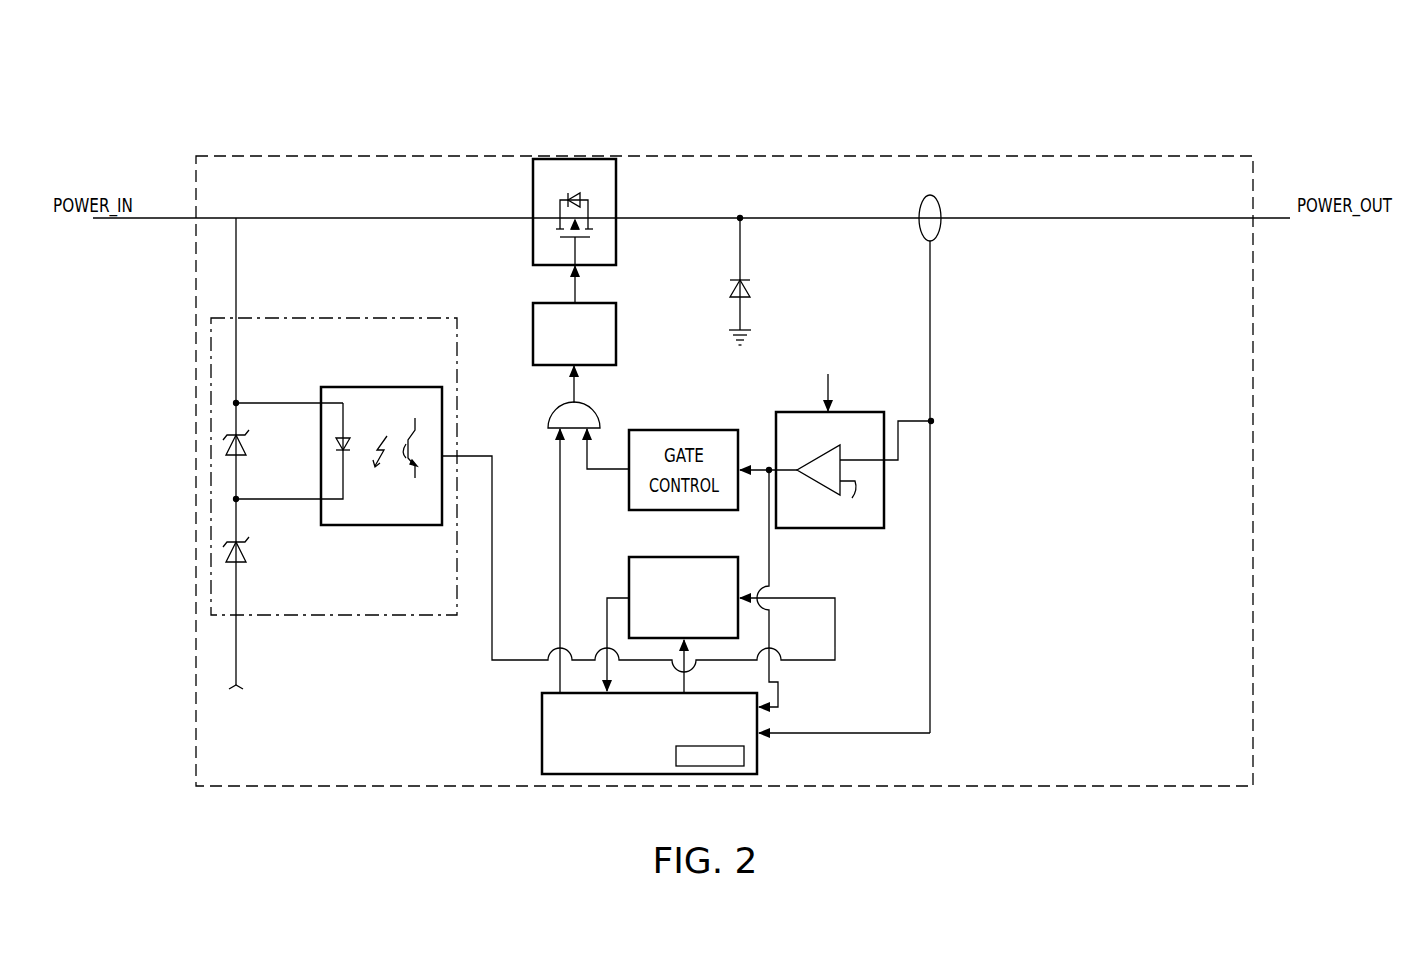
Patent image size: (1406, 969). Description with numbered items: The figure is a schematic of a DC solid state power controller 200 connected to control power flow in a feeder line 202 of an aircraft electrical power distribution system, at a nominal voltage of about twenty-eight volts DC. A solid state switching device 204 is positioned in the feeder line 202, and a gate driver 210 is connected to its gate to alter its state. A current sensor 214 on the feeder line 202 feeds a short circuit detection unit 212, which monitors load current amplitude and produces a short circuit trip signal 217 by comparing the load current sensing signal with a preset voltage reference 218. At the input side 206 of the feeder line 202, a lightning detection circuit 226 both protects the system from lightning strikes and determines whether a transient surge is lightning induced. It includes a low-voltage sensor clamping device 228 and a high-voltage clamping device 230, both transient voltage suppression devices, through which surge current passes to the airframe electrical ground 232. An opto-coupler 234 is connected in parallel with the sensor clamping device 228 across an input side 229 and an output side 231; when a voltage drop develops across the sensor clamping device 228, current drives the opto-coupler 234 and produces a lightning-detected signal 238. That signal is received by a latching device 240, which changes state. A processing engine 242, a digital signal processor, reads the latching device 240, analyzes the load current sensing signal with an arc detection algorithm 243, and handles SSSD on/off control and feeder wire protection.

The DC solid state power controller 200 is at (724, 424).
The feeder line 202 is at (1192, 218).
The solid state switching device 204 is at (616, 197).
The input side 206 is at (168, 218).
The gate driver 210 is at (616, 338).
The short circuit detection unit 212 is at (776, 412).
The current sensor 214 is at (941, 228).
The short circuit trip signal 217 is at (769, 540).
The preset voltage reference 218 is at (851, 500).
The lightning detection circuit 226 is at (369, 318).
The sensor clamping device 228 is at (230, 447).
The input side 229 is at (232, 432).
The high-voltage clamping device 230 is at (231, 568).
The output side 231 is at (232, 462).
The airframe electrical ground 232 is at (234, 690).
The opto-coupler 234 is at (405, 527).
The lightning-detected signal 238 is at (492, 636).
The latching device 240 is at (683, 557).
The processing engine 242 is at (757, 748).
The arc detection algorithm 243 is at (703, 768).